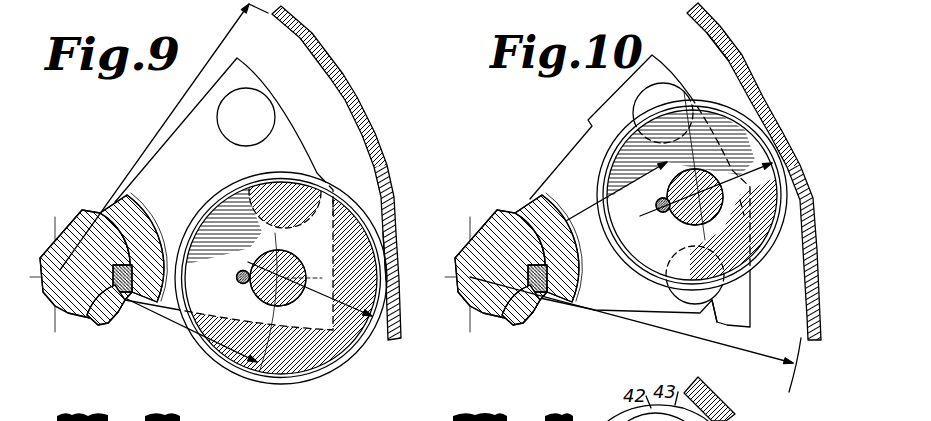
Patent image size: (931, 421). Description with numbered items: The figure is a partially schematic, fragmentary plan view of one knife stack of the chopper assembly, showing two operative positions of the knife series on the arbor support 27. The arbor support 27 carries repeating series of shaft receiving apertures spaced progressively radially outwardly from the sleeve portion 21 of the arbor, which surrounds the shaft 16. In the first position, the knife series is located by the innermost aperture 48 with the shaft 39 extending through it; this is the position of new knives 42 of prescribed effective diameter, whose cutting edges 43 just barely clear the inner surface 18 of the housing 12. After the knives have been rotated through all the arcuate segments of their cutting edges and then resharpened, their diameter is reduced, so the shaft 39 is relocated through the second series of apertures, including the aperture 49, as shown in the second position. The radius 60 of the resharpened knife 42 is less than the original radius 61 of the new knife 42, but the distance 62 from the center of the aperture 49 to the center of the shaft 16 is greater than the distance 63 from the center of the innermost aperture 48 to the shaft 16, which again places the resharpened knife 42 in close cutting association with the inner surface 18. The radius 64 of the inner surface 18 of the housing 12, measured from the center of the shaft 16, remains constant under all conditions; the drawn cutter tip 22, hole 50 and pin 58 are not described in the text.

In FIG. 9, the housing 12 is at (332, 72).
In FIG. 10, the housing 12 is at (738, 60).
In FIG. 9, the shaft 16 is at (78, 210).
In FIG. 10, the shaft 16 is at (492, 214).
In FIG. 9, the inner surface 18 is at (376, 174).
In FIG. 10, the inner surface 18 is at (708, 36).
In FIG. 9, the sleeve portion 21 is at (136, 222).
In FIG. 10, the sleeve portion 21 is at (541, 241).
In FIG. 9, the cutting tip 22 is at (97, 315).
In FIG. 10, the cutting tip 22 is at (513, 313).
In FIG. 9, the arbor support 27 is at (290, 130).
In FIG. 10, the arbor support 27 is at (752, 290).
In FIG. 9, the shaft 39 is at (262, 262).
In FIG. 10, the shaft 39 is at (680, 224).
In FIG. 9, the knife 42 is at (338, 348).
In FIG. 10, the knife 42 is at (768, 236).
In FIG. 9, the cutting edge 43 is at (320, 372).
In FIG. 10, the cutting edge 43 is at (763, 258).
In FIG. 9, the innermost aperture 48 is at (292, 262).
In FIG. 10, the innermost aperture 48 is at (713, 300).
In FIG. 9, the aperture 49 is at (334, 192).
In FIG. 10, the aperture 49 is at (712, 205).
In FIG. 9, the aperture 50 is at (264, 100).
In FIG. 10, the aperture 50 is at (665, 88).
In FIG. 9, the pin 58 is at (237, 280).
In FIG. 10, the pin 58 is at (655, 208).
In FIG. 10, the radius 60 is at (744, 160).
In FIG. 9, the original radius 61 is at (343, 306).
In FIG. 10, the distance 62 is at (577, 216).
In FIG. 9, the distance 63 is at (141, 316).
In FIG. 9, the radius 64 is at (183, 88).
In FIG. 10, the radius 64 is at (648, 324).